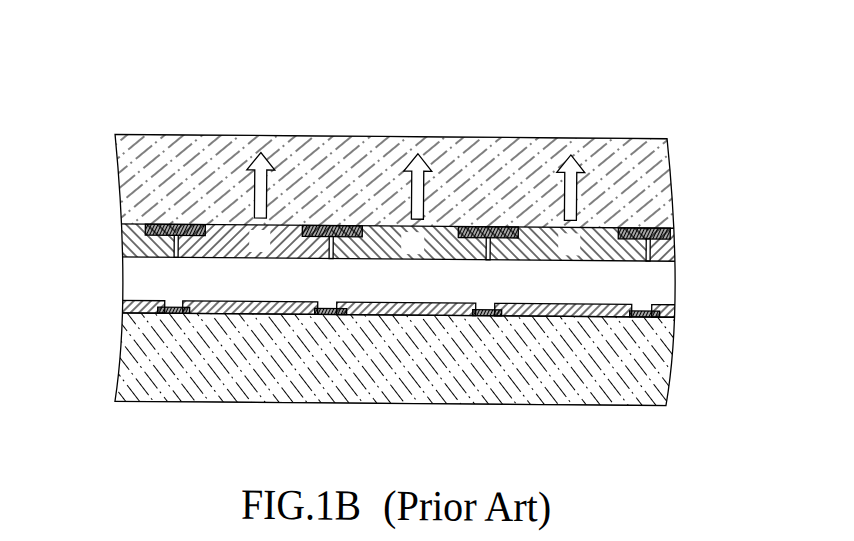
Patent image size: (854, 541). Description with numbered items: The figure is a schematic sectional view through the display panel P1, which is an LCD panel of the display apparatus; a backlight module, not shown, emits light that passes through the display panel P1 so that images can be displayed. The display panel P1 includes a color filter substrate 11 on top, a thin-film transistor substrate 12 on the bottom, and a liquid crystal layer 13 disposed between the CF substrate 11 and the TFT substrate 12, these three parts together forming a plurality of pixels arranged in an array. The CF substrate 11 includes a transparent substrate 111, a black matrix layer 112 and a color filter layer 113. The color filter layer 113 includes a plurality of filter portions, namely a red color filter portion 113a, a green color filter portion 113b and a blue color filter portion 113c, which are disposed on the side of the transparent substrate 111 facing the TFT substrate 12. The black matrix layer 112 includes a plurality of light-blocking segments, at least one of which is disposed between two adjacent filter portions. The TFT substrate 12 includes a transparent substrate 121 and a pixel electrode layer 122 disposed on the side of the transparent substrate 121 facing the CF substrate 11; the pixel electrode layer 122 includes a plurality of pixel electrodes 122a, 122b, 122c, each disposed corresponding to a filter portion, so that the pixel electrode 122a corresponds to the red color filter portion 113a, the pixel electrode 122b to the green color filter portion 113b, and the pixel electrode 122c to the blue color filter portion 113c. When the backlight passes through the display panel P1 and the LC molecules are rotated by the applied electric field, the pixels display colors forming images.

The display panel P1 is at (385, 224).
The color filter substrate 11 is at (382, 175).
The thin-film transistor substrate 12 is at (388, 373).
The transparent substrate 111 is at (655, 167).
The black matrix layer 112 is at (174, 226).
The color filter layer 113 is at (395, 176).
The red color filter portion 113a is at (228, 228).
The green color filter portion 113b is at (384, 238).
The blue color filter portion 113c is at (594, 243).
The liquid crystal layer 13 is at (648, 283).
The transparent substrate 121 is at (650, 369).
The pixel electrode layer 122 is at (395, 373).
The pixel electrode 122a is at (236, 309).
The pixel electrode 122b is at (407, 306).
The pixel electrode 122c is at (573, 312).